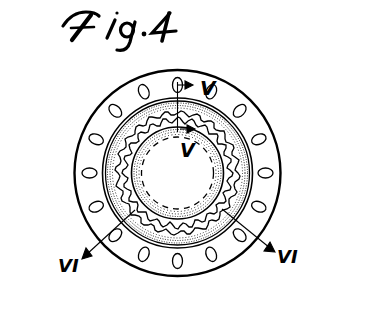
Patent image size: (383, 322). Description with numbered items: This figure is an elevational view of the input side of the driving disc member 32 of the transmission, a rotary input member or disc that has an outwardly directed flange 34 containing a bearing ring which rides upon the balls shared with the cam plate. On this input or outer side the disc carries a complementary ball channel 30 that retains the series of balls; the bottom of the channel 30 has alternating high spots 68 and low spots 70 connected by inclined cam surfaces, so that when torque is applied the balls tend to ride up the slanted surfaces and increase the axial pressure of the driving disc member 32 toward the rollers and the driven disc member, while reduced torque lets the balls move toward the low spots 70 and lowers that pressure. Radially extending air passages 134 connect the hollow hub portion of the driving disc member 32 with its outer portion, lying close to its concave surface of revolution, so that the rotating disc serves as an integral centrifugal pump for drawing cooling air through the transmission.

The ball channel 30 is at (241, 185).
The driving disc member 32 is at (270, 118).
The outwardly directed flange 34 is at (219, 263).
The high spots 68 is at (188, 232).
The low spots 70 is at (133, 222).
The radially extending air passages 134 is at (216, 92).